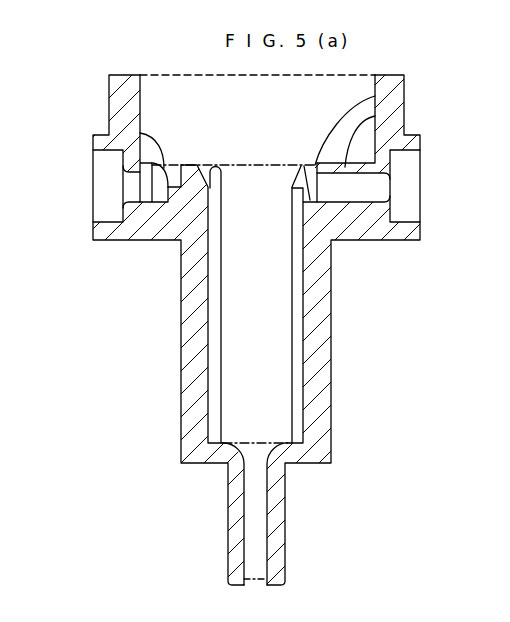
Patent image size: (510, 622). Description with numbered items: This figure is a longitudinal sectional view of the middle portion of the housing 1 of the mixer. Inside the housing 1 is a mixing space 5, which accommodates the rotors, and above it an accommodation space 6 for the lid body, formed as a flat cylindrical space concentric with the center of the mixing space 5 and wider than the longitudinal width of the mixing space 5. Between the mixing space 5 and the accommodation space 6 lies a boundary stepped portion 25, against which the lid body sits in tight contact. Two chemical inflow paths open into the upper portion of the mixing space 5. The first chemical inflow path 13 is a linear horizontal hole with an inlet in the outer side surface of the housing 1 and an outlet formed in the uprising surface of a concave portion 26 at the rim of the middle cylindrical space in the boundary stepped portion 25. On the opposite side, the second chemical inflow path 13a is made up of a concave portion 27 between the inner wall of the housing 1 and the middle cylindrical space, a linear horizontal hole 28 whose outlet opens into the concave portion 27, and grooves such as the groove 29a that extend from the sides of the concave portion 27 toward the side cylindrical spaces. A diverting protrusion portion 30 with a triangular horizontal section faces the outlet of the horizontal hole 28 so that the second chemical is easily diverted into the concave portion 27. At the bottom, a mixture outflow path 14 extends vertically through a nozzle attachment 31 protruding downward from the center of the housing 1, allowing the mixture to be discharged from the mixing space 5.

The housing 1 is at (332, 387).
The mixing space 5 is at (240, 328).
The accommodation space 6 is at (167, 107).
The first chemical inflow path 13 is at (362, 194).
The second chemical inflow path 13a is at (137, 194).
The mixture outflow path 14 is at (258, 522).
The boundary stepped portion 25 is at (379, 113).
The concave portion 26 is at (381, 95).
The concave portion 27 is at (162, 198).
The linear horizontal hole 28 is at (148, 180).
The groove 29a is at (139, 132).
The diverting protrusion portion 30 is at (158, 188).
The nozzle attachment 31 is at (233, 553).